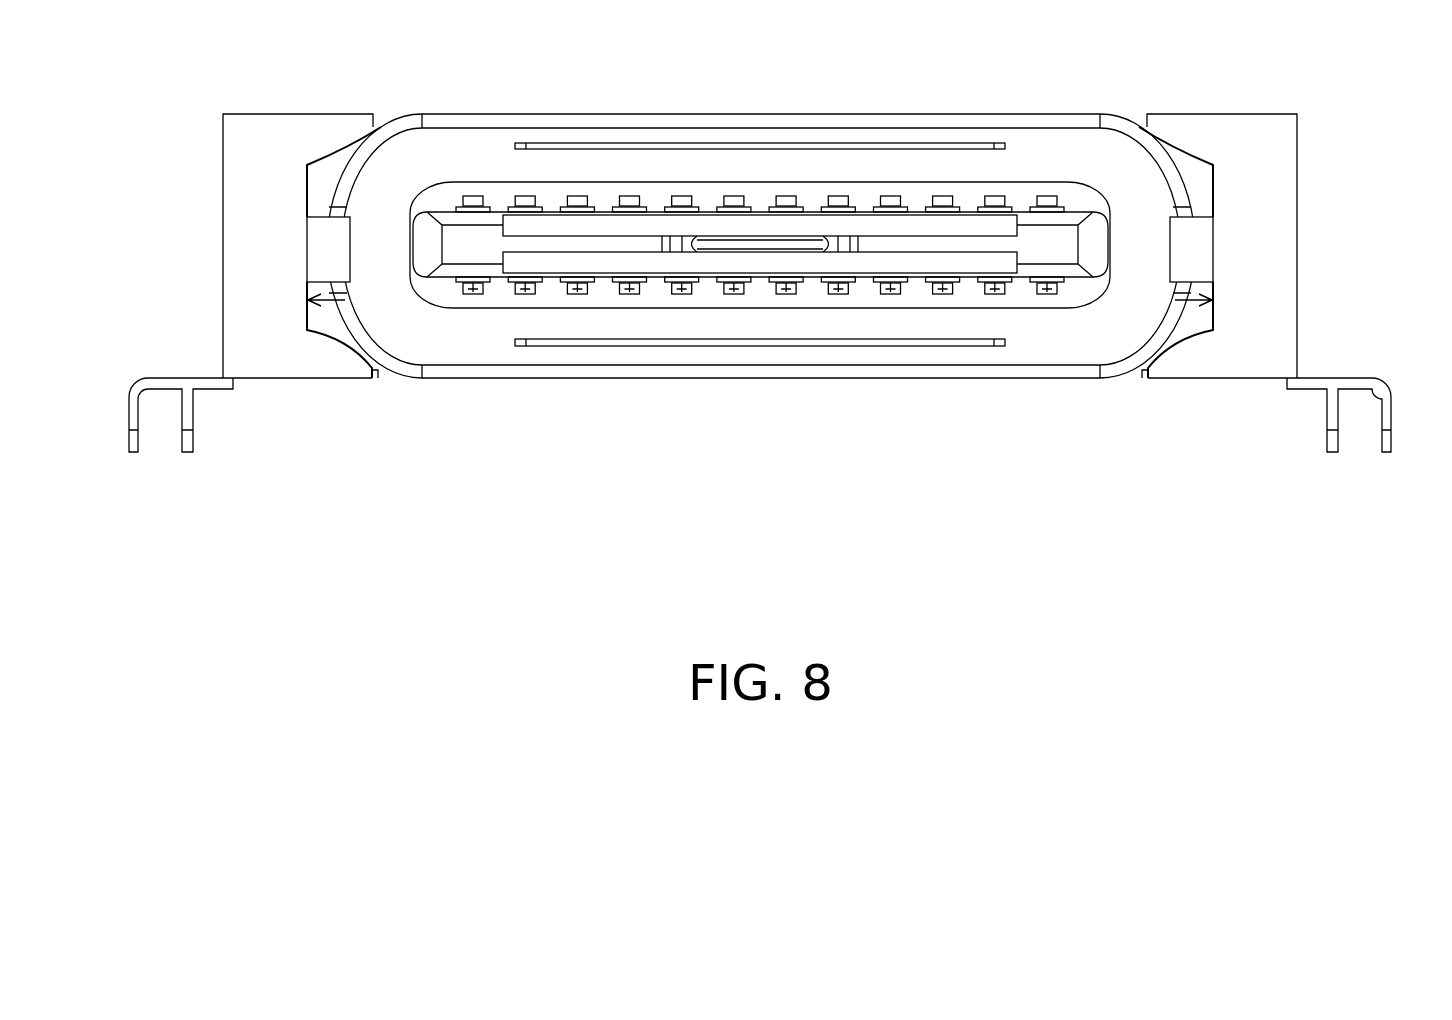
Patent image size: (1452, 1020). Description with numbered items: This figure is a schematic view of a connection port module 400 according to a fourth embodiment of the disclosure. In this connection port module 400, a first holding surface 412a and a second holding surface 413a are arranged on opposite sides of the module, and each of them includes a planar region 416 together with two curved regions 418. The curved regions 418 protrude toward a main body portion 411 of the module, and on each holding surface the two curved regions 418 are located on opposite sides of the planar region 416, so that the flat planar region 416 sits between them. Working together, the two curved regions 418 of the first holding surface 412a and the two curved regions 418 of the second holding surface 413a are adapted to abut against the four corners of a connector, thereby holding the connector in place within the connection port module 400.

The connection port module 400 is at (1437, 572).
The main body portion 411 is at (385, 376).
The first holding surface 412a is at (343, 302).
The second holding surface 413a is at (1177, 302).
The planar region 416 is at (305, 193).
The curved region 418 is at (347, 147).